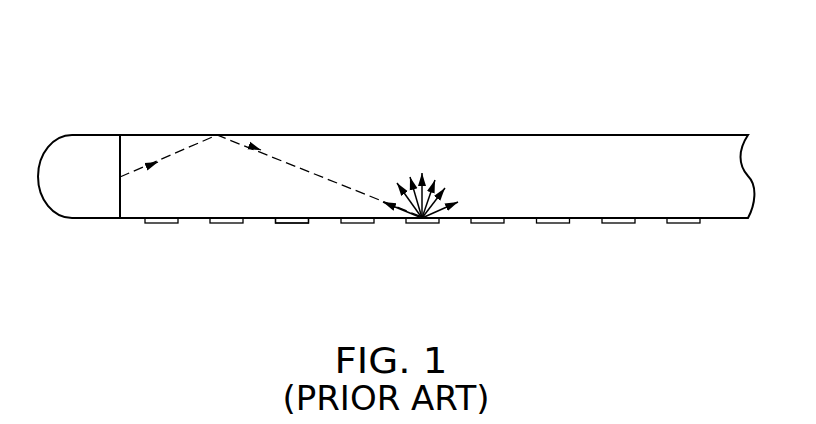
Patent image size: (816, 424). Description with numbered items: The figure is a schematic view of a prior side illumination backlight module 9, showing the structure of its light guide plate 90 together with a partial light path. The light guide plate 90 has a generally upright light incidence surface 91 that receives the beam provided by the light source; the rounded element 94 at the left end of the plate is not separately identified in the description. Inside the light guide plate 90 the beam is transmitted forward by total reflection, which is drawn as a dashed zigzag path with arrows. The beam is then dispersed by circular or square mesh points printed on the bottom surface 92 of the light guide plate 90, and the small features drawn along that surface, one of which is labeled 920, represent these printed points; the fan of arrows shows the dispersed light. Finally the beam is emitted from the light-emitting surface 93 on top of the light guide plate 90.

The side illumination backlight module 9 is at (339, 34).
The light guide plate 90 is at (643, 165).
The light incidence surface 91 is at (120, 152).
The bottom surface 92 is at (190, 223).
The microstructure 920 is at (288, 223).
The light-emitting surface 93 is at (483, 135).
The light source / curved end 94 is at (73, 167).